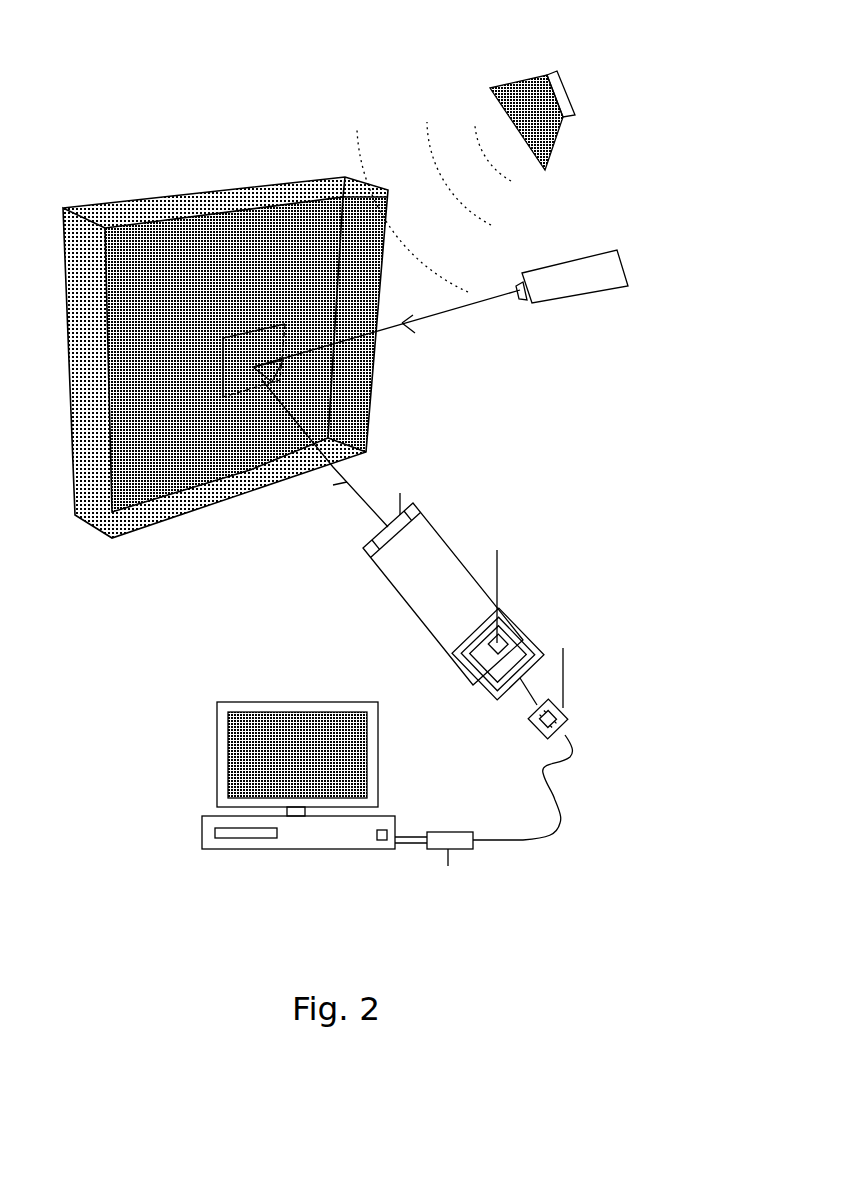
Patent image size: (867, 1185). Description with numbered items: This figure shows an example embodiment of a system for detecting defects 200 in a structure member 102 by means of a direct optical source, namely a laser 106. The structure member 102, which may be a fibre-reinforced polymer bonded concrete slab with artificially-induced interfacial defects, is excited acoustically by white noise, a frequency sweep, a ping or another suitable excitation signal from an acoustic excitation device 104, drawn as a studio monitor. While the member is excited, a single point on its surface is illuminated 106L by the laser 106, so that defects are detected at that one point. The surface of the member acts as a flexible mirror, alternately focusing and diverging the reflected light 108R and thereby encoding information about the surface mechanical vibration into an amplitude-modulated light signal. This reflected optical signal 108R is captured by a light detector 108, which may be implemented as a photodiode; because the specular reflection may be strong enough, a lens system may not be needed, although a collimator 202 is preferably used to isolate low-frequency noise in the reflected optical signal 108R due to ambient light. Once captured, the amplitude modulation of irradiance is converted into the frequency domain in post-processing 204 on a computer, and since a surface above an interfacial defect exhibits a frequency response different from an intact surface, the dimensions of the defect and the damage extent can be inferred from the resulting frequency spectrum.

The system for detecting defects 200 is at (642, 855).
The structure member 102 is at (189, 172).
The acoustic excitation device 104 is at (593, 107).
The laser 106 is at (643, 267).
The illumination 106L is at (481, 295).
The reflected optical signal 108R is at (362, 465).
The light detector 108 is at (527, 653).
The collimator 202 is at (412, 607).
The post-processing 204 is at (270, 813).